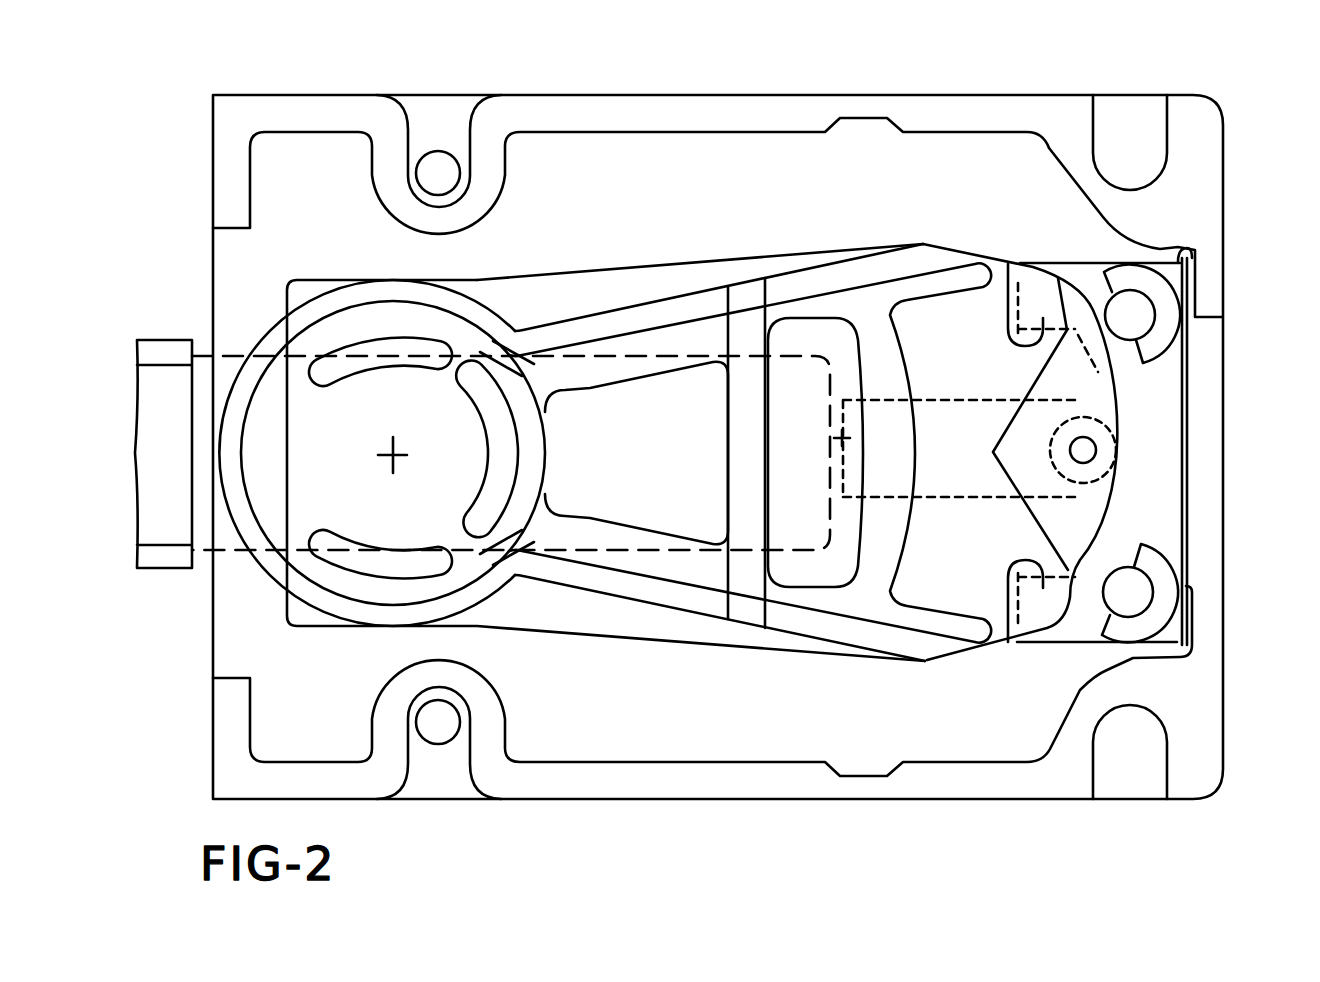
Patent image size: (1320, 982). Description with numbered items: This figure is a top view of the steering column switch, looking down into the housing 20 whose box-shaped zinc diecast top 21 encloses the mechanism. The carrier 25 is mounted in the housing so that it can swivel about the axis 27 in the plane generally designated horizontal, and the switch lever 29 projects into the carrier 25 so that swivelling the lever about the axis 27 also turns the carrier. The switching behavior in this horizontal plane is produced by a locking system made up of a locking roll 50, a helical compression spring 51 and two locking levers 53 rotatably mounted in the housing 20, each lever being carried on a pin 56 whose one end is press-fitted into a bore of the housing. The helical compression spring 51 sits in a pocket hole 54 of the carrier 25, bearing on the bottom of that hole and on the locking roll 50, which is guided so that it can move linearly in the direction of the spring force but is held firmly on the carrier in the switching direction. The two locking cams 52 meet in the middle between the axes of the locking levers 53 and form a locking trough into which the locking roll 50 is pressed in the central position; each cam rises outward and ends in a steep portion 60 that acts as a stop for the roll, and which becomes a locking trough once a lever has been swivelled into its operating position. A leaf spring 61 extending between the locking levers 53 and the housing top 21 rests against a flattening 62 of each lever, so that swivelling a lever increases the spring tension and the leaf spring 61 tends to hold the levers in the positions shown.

The housing 20 is at (760, 76).
The top 21 is at (548, 112).
The carrier 25 is at (580, 292).
The axis 27 is at (397, 455).
The switch lever 29 is at (228, 370).
The locking roll 50 is at (1173, 457).
The helical compression spring 51 is at (931, 398).
The locking cam 52 is at (1110, 410).
The locking lever 53 is at (1170, 368).
The pocket hole 54 is at (835, 438).
The pin 56 is at (1143, 320).
The portion 60 is at (1005, 270).
The leaf spring 61 is at (1187, 262).
The flattening 62 is at (1187, 316).